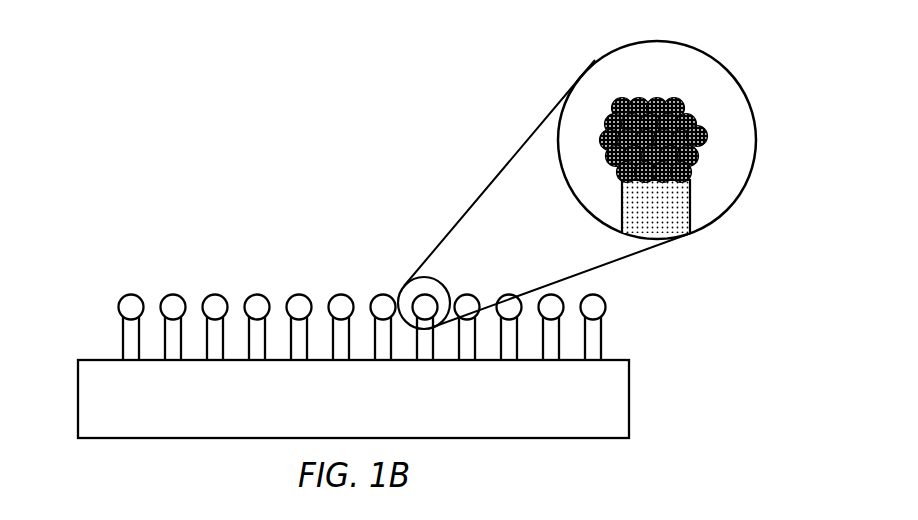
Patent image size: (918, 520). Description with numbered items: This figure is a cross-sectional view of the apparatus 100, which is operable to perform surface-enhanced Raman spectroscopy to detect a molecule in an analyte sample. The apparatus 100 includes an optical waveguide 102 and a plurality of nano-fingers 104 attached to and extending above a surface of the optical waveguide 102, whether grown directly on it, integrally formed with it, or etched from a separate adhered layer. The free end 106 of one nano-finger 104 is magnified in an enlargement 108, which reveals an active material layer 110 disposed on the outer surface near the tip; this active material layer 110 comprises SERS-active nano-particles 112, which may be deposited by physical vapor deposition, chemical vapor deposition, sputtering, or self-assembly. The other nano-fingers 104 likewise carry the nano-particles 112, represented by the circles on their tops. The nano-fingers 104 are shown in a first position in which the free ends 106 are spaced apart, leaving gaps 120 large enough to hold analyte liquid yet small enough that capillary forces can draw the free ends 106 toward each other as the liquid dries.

The apparatus 100 is at (126, 254).
The optical waveguide 102 is at (630, 393).
The nano-fingers 104 is at (123, 340).
The free end 106 is at (410, 298).
The enlargement 108 is at (565, 95).
The active material layer 110 is at (590, 144).
The SERS-active nano-particles 112 is at (660, 98).
The gaps 120 is at (279, 298).